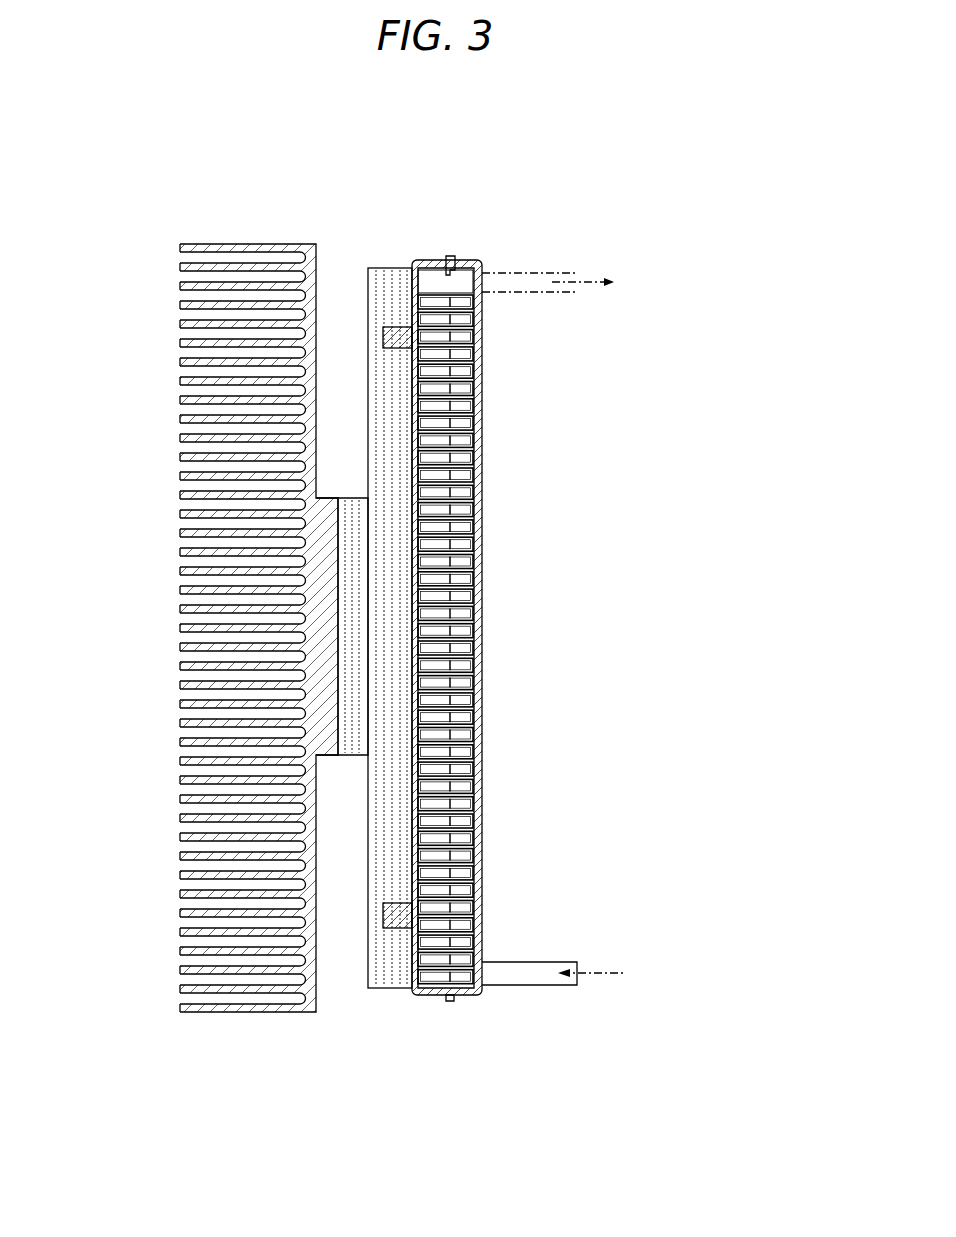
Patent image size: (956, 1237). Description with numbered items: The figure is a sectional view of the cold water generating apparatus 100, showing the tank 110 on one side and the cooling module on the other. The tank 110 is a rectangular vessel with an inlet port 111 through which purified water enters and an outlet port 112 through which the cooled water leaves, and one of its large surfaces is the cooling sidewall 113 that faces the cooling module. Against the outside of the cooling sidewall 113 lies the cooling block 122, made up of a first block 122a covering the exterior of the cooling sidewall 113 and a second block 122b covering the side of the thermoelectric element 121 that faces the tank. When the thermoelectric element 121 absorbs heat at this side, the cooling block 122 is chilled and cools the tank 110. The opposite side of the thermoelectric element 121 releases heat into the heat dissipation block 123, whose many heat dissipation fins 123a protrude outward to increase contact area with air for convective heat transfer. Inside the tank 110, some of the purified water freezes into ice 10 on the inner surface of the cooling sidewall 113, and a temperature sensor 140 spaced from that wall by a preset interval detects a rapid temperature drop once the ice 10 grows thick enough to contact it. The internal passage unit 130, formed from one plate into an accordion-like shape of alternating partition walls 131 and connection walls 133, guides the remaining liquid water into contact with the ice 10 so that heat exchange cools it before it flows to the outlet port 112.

The cold water generating apparatus 100 is at (226, 219).
The ice 10 is at (430, 260).
The tank 110 is at (483, 632).
The inlet port 111 is at (578, 985).
The outlet port 112 is at (577, 273).
The cooling sidewall 113 is at (470, 752).
The thermoelectric element 121 is at (339, 492).
The cooling block 122 is at (435, 1110).
The first block 122a is at (392, 988).
The second block 122b is at (346, 760).
The heat dissipation block 123 is at (200, 677).
The heat dissipation fins 123a is at (180, 471).
The internal passage unit 130 is at (568, 500).
The partition walls 131 is at (468, 533).
The connection walls 133 is at (470, 548).
The temperature sensor 140 is at (452, 264).